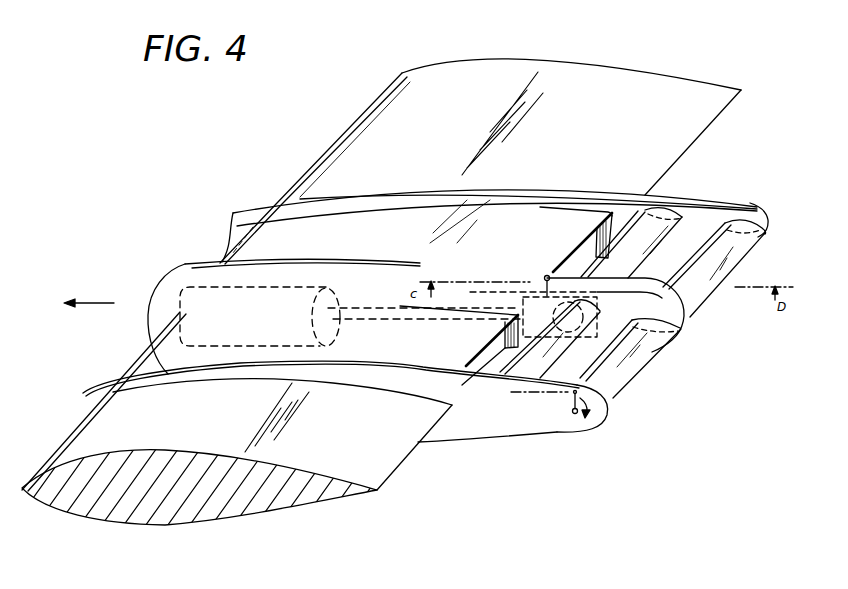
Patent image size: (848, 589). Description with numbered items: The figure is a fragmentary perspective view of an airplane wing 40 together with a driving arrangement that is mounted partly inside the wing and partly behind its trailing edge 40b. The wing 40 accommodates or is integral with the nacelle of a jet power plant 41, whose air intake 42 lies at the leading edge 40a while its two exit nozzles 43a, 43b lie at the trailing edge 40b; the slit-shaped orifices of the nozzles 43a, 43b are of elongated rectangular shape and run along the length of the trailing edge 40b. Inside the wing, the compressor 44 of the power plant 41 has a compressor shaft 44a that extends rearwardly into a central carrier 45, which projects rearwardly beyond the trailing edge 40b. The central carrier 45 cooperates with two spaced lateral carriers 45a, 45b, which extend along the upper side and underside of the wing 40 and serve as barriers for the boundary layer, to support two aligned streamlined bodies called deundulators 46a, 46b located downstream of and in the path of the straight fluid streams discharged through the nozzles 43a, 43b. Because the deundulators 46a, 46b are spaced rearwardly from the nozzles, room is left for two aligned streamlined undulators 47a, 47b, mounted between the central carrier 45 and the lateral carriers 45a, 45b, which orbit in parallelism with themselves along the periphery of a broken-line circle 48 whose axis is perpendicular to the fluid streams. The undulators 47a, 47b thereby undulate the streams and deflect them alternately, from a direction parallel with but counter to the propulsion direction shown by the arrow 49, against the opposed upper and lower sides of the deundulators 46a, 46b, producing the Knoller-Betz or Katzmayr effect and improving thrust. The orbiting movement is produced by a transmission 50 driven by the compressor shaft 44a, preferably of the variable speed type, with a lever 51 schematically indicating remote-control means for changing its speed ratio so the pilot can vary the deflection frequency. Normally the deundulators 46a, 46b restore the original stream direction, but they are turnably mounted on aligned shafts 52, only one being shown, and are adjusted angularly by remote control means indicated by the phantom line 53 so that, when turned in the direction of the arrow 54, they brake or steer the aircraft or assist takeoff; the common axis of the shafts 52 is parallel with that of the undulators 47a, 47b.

The airplane wing 40 is at (330, 138).
The leading edge 40a is at (53, 442).
The trailing edge 40b is at (735, 106).
The power plant 41 is at (309, 256).
The air intake 42 is at (165, 272).
The exit nozzle 43a is at (502, 352).
The exit nozzle 43b is at (584, 240).
The compressor 44 is at (305, 342).
The compressor shaft 44a is at (362, 302).
The central carrier 45 is at (690, 318).
The lateral carrier 45a is at (598, 428).
The lateral carrier 45b is at (723, 210).
The deundulator 46a is at (652, 358).
The deundulator 46b is at (740, 259).
The undulator 47a is at (534, 362).
The undulator 47b is at (643, 230).
The circle 48 is at (597, 312).
The arrow 49 is at (80, 308).
The transmission 50 is at (500, 332).
The lever 51 is at (531, 276).
The shaft 52 is at (573, 413).
The phantom line 53 is at (516, 400).
The arrow 54 is at (598, 406).